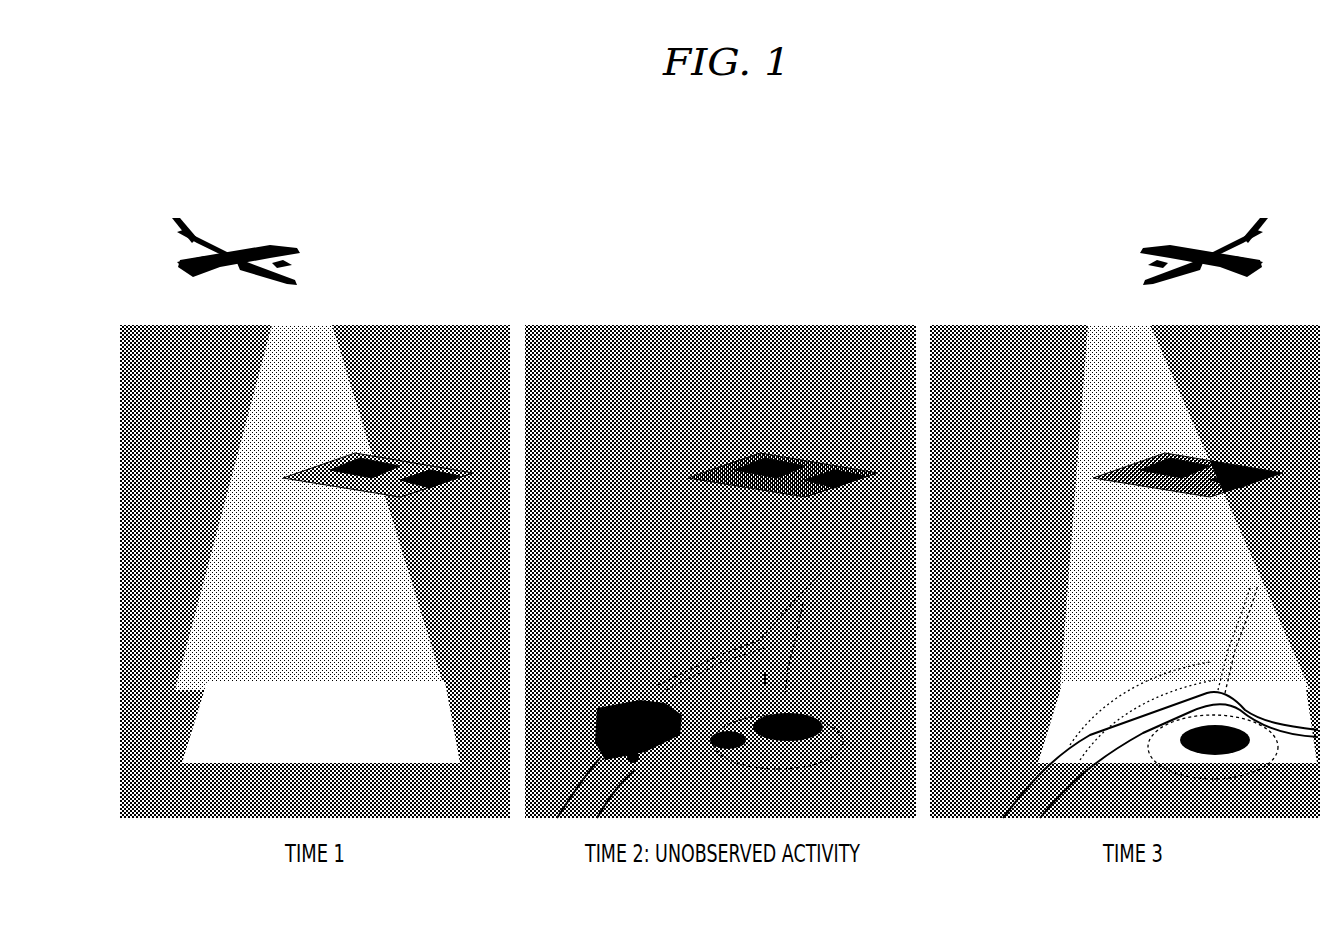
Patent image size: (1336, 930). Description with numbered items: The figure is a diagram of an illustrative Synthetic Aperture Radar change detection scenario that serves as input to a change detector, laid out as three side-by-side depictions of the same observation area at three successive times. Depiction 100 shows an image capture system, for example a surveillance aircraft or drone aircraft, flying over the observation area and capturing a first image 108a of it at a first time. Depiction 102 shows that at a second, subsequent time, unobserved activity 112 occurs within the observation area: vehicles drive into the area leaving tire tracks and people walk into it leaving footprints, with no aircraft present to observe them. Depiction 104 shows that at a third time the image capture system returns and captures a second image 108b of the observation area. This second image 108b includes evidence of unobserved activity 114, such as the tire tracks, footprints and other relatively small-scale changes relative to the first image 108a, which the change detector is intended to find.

The depiction 100 is at (333, 138).
The depiction 102 is at (738, 138).
The depiction 104 is at (1146, 138).
The first image 108a is at (268, 682).
The second image 108b is at (1170, 662).
The unobserved activity 112 is at (706, 641).
The evidence of unobserved activity 114 is at (1215, 609).